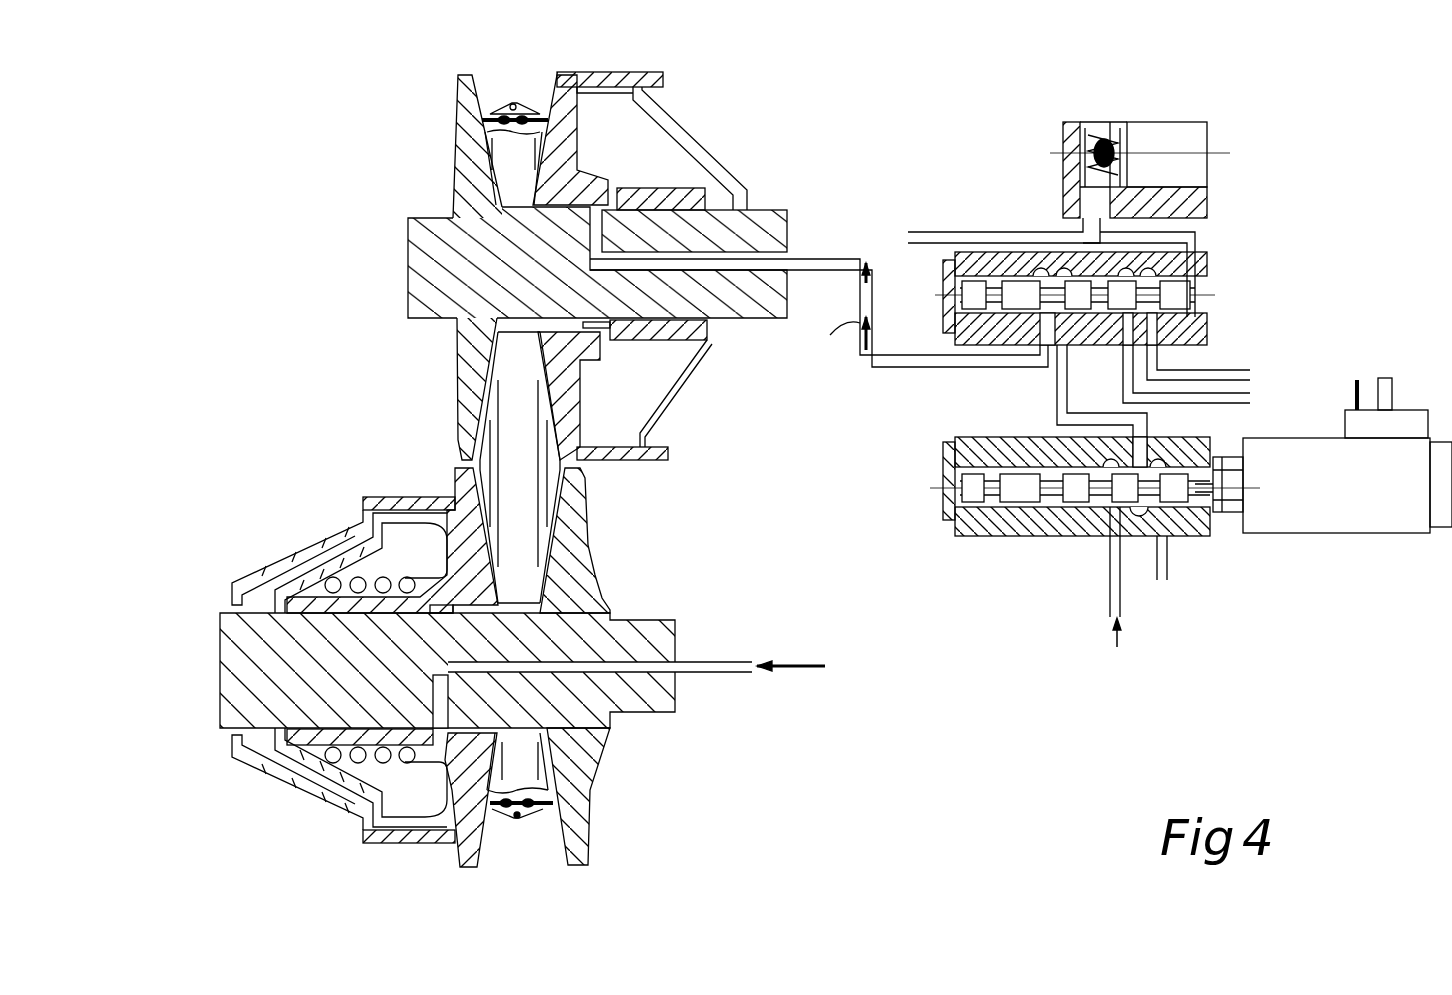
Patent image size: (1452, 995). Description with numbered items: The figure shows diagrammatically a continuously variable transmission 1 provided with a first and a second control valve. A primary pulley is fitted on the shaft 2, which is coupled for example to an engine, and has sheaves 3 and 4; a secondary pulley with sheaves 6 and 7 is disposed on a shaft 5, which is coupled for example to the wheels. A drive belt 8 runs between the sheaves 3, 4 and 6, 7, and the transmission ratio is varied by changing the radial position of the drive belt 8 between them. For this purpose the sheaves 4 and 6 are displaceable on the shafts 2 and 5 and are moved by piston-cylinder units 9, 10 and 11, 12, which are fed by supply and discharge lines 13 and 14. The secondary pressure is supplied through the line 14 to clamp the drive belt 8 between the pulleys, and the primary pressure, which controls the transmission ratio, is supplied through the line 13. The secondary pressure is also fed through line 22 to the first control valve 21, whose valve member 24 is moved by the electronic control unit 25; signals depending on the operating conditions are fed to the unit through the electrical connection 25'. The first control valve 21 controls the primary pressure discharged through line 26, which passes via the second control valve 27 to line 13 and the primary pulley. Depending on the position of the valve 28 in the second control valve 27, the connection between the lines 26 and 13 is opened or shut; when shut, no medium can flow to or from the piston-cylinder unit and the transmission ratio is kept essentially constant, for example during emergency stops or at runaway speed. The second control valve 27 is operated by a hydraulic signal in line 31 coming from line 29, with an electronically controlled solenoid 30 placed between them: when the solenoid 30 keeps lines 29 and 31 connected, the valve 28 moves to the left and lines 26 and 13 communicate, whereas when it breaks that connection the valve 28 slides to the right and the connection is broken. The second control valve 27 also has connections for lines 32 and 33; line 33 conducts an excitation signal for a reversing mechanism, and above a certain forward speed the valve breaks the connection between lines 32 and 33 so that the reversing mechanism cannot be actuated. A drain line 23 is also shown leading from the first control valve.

The continuously variable transmission 1 is at (327, 172).
The shaft 2 is at (417, 220).
The sheave 3 is at (455, 118).
The sheave 4 is at (587, 68).
The shaft 5 is at (262, 655).
The sheave 6 is at (468, 790).
The sheave 7 is at (595, 780).
The drive belt 8 is at (521, 820).
The piston-cylinder unit 9 is at (632, 398).
The piston-cylinder unit 10 is at (700, 388).
The piston-cylinder unit 11 is at (407, 775).
The piston-cylinder unit 12 is at (330, 770).
The supply and discharge line 13 is at (833, 260).
The supply and discharge line 14 is at (695, 663).
The first control valve 21 is at (970, 505).
The line 22 is at (1120, 590).
The drain line 23 is at (1165, 570).
The valve member 24 is at (1010, 500).
The electronic control unit 25 is at (1323, 505).
The electrical connection 25' is at (1409, 333).
The line 26 is at (1060, 395).
The second control valve 27 is at (1210, 295).
The valve 28 is at (1025, 285).
The line 29 is at (973, 232).
The solenoid 30 is at (1070, 130).
The line 31 is at (1205, 232).
The line 32 is at (1220, 365).
The line 33 is at (1253, 393).